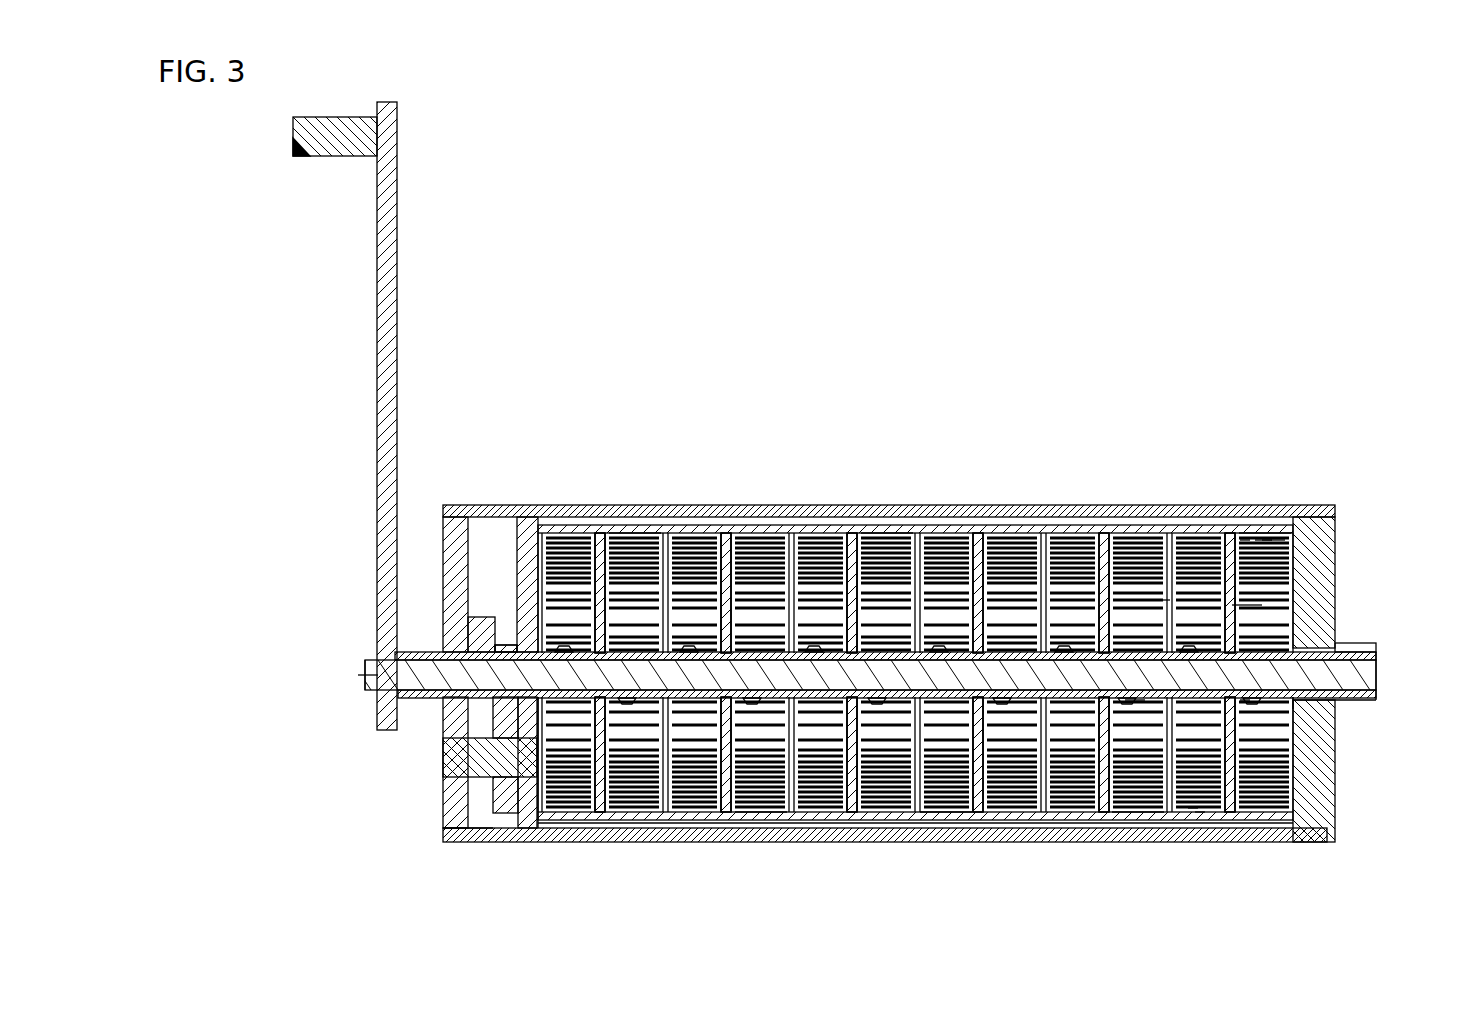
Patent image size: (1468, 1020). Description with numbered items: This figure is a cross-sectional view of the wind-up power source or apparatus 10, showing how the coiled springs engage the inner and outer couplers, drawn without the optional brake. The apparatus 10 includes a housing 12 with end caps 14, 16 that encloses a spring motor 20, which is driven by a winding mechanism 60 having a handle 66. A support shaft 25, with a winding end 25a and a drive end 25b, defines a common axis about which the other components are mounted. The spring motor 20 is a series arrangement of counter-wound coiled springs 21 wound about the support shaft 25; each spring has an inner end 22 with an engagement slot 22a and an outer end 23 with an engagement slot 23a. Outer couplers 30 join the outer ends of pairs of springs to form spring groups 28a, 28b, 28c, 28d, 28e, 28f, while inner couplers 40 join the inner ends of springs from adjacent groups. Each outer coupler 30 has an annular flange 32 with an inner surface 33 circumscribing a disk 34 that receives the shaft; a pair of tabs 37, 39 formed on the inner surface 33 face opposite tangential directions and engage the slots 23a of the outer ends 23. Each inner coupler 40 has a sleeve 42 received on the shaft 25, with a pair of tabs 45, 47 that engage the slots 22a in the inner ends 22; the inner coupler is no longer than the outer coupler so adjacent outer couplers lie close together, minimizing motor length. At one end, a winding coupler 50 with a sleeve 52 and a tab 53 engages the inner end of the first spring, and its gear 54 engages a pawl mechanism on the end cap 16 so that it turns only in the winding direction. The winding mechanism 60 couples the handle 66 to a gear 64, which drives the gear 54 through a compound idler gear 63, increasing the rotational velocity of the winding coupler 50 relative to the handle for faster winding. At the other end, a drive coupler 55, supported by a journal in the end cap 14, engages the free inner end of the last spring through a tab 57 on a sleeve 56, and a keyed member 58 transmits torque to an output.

The wind-up power source or apparatus 10 is at (843, 308).
The housing 12 is at (1242, 830).
The end cap 14 is at (1335, 765).
The end cap 16 is at (540, 820).
The spring motor 20 is at (680, 824).
The coiled springs 21 is at (1058, 546).
The inner end 22 is at (1130, 650).
The engagement slot or aperture 22a is at (1165, 648).
The outer end 23 is at (1245, 525).
The engagement slot or aperture 23a is at (1265, 525).
The support shaft 25 is at (410, 668).
The winding end 25a is at (375, 673).
The drive end 25b is at (1365, 678).
The spring group 28a is at (630, 530).
The spring group 28b is at (755, 822).
The spring group 28c is at (887, 530).
The spring group 28d is at (940, 822).
The spring group 28e is at (1135, 822).
The spring group 28f is at (1290, 525).
The outer coupler 30 is at (1215, 526).
The annular flange 32 is at (1200, 815).
The inner surface 33 is at (1243, 702).
The disk 34 is at (1232, 610).
The tab 37 is at (1193, 810).
The tab 39 is at (1265, 540).
The inner coupler 40 is at (1103, 648).
The sleeve 42 is at (1130, 702).
The tab 45 is at (1140, 702).
The tab 47 is at (1205, 650).
The winding coupler 50 is at (540, 650).
The sleeve 52 is at (572, 700).
The tab 53 is at (565, 648).
The gear 54 is at (505, 645).
The drive coupler 55 is at (1378, 696).
The sleeve 56 is at (1365, 702).
The tab 57 is at (1333, 706).
The keyed member 58 is at (1362, 645).
The winding mechanism 60 is at (440, 808).
The compound idler gear 63 is at (478, 815).
The gear 64 is at (473, 717).
The handle 66 is at (402, 220).